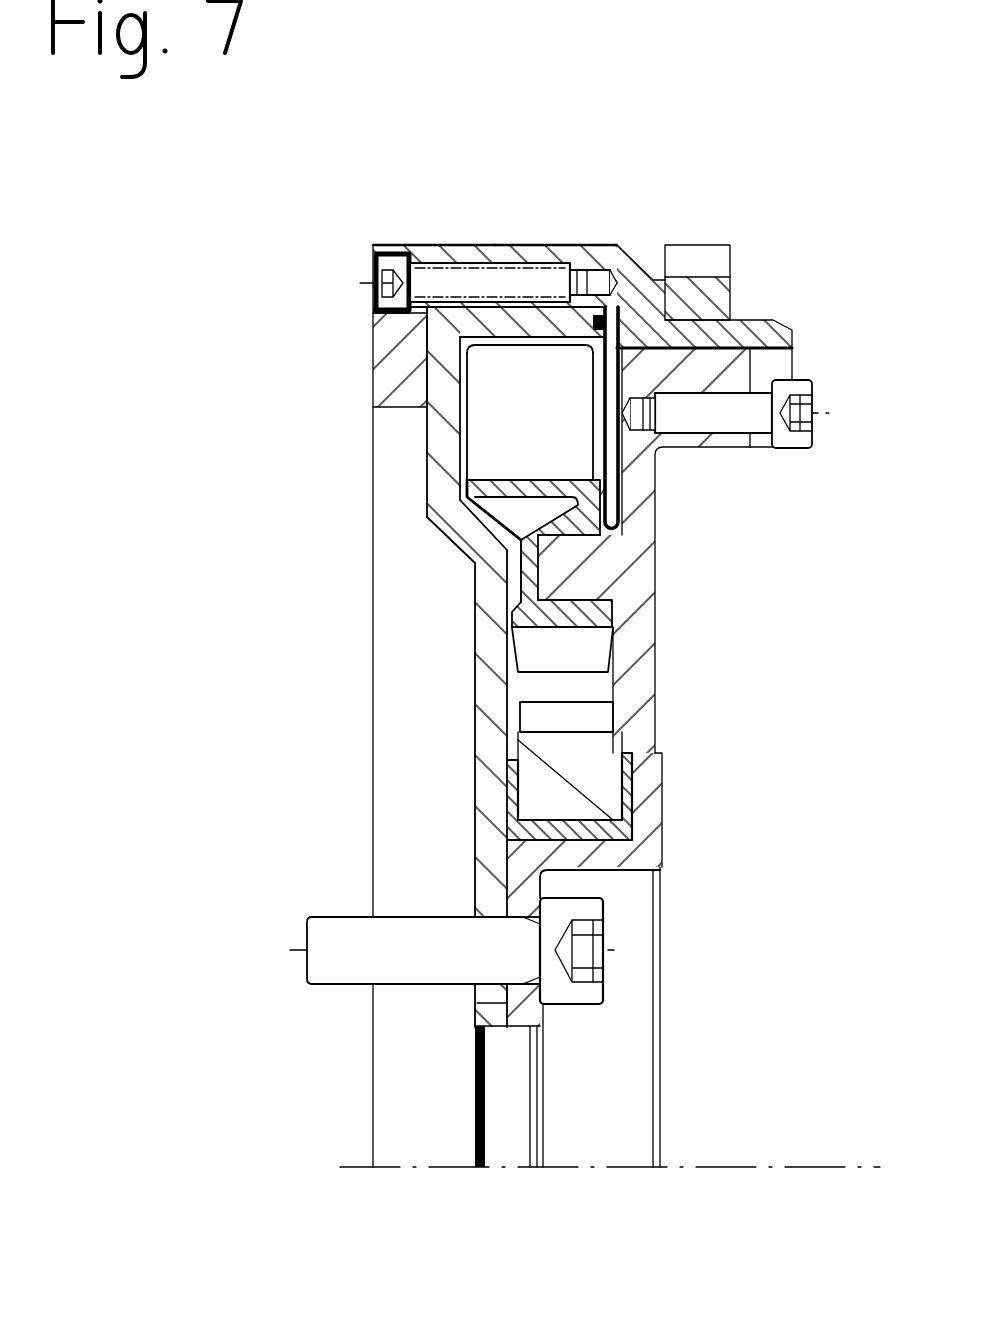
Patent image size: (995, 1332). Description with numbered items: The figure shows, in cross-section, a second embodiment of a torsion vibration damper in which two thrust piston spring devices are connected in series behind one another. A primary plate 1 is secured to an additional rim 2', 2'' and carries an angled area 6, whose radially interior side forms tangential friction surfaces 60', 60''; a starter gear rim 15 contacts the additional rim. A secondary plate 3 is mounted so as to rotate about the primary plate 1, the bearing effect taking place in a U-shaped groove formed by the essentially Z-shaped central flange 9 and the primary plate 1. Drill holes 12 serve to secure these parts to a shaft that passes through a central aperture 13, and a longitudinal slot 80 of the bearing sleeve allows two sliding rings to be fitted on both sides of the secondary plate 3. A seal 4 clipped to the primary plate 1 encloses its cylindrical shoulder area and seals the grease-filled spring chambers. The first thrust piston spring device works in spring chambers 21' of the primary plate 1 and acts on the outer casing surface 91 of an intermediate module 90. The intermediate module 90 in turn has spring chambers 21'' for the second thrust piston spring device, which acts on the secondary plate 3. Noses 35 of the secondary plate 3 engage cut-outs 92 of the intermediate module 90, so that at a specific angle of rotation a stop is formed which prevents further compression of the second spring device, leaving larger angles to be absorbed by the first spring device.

The primary plate 1 is at (432, 415).
The additional rim 2' is at (434, 231).
The additional rim 2'' is at (513, 228).
The secondary plate 3 is at (655, 540).
The seal 4 is at (607, 468).
The angled area 6 is at (545, 305).
The central flange 9 is at (664, 810).
The drill holes 12 is at (622, 943).
The central aperture 13 is at (492, 1111).
The starter gear rim 15 is at (733, 280).
The spring chambers 21' is at (426, 406).
The spring chambers 21'' is at (435, 712).
The noses 35 is at (598, 570).
The tangential friction surfaces 60' is at (415, 358).
The tangential friction surfaces 60'' is at (437, 654).
The longitudinal slot 80 is at (658, 888).
The intermediate module 90 is at (527, 550).
The outer casing surface 91 is at (478, 470).
The cut-outs 92 is at (522, 590).